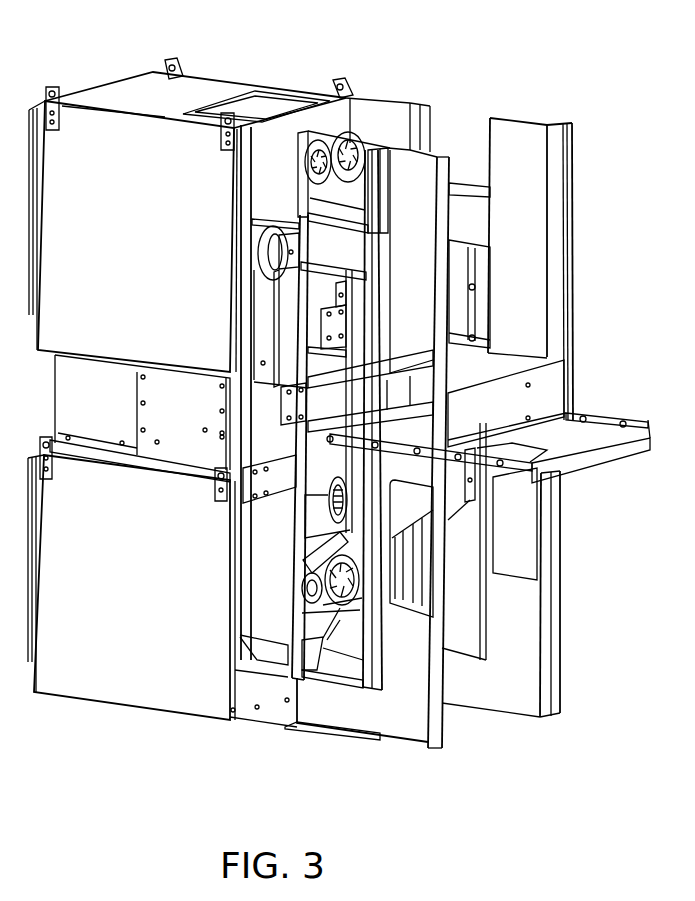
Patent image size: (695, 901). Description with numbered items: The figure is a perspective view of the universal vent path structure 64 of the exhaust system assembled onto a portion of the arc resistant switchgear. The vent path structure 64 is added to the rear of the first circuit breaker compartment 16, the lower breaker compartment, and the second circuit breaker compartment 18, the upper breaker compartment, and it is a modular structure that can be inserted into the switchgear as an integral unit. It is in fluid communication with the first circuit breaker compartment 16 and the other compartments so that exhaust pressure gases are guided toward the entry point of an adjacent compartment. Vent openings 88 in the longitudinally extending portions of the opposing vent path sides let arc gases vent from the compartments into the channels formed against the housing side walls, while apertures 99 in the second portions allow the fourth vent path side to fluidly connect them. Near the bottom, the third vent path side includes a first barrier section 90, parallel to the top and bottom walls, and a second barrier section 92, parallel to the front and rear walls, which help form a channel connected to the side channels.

The first circuit breaker compartment 16 is at (135, 668).
The second circuit breaker compartment 18 is at (102, 148).
The universal vent path structure 64 is at (580, 181).
The vent openings 88 is at (410, 432).
The first barrier section 90 is at (327, 650).
The second barrier section 92 is at (350, 672).
The apertures 99 is at (410, 400).